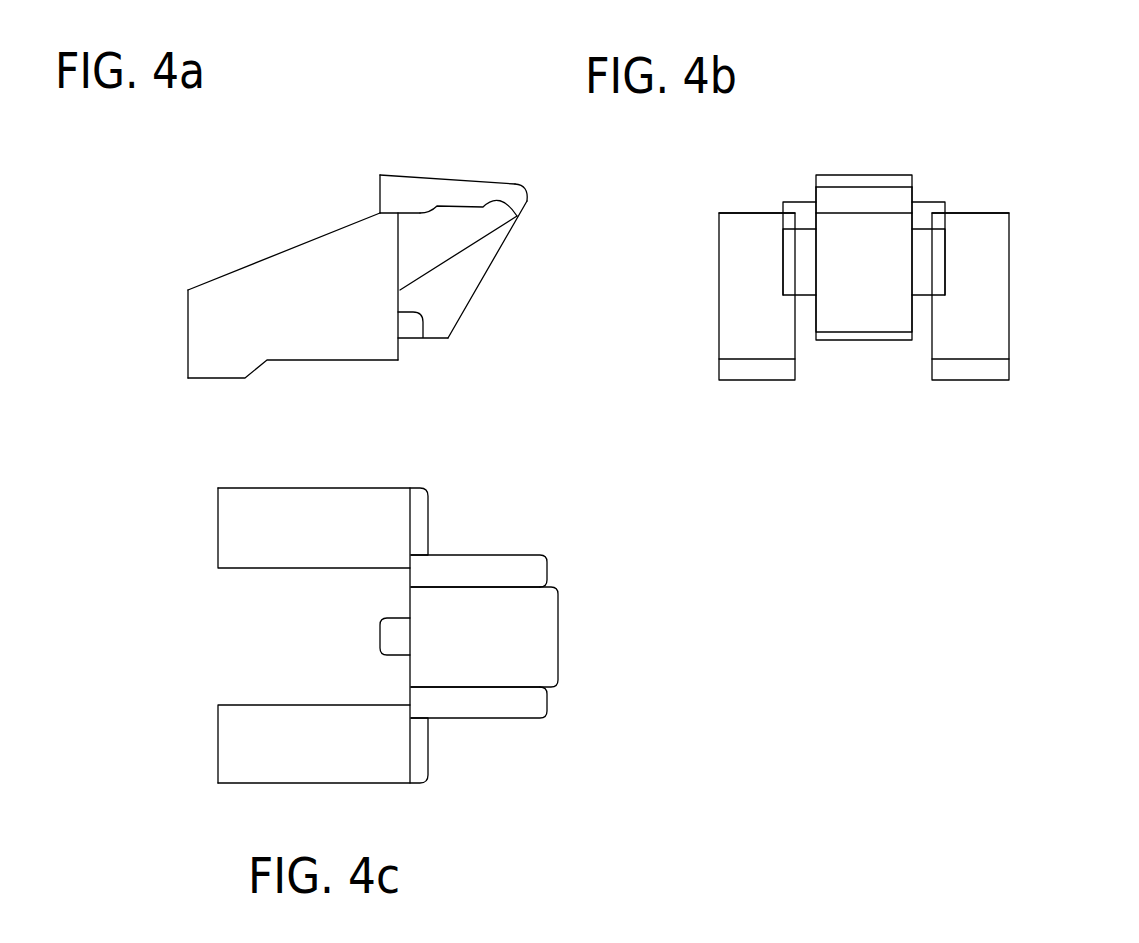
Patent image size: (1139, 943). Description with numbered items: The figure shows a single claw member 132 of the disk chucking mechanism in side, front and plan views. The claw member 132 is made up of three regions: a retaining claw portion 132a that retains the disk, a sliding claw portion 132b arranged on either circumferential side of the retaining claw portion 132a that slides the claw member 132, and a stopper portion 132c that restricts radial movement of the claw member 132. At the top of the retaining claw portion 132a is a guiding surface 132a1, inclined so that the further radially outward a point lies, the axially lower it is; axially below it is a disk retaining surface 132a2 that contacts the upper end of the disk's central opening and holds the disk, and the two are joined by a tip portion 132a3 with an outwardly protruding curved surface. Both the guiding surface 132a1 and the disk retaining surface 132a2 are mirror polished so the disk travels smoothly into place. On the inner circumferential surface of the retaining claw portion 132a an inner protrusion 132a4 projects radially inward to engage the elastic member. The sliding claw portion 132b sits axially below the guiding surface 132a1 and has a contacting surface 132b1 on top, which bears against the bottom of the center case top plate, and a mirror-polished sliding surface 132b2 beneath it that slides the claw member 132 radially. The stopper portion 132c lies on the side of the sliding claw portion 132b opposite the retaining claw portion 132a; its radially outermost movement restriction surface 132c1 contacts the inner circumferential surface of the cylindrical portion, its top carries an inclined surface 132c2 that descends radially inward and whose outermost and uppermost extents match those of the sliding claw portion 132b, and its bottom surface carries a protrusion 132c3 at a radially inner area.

In FIG. 4a, the claw member 132 is at (317, 187).
In FIG. 4b, the claw member 132 is at (873, 147).
In FIG. 4c, the claw member 132 is at (520, 528).
In FIG. 4a, the retaining claw portion 132a is at (400, 195).
In FIG. 4b, the retaining claw portion 132a is at (922, 238).
In FIG. 4c, the retaining claw portion 132a is at (558, 625).
In FIG. 4a, the guiding surface 132a1 is at (462, 180).
In FIG. 4b, the guiding surface 132a1 is at (833, 178).
In FIG. 4c, the guiding surface 132a1 is at (512, 650).
In FIG. 4a, the disk retaining surface 132a2 is at (498, 258).
In FIG. 4b, the disk retaining surface 132a2 is at (867, 295).
In FIG. 4a, the tip portion 132a3 is at (527, 197).
In FIG. 4b, the tip portion 132a3 is at (887, 197).
In FIG. 4c, the inner protrusion 132a4 is at (388, 640).
In FIG. 4a, the sliding claw portion 132b is at (423, 278).
In FIG. 4b, the sliding claw portion 132b is at (782, 273).
In FIG. 4c, the sliding claw portion 132b is at (553, 568).
In FIG. 4a, the contacting surface 132b1 is at (413, 208).
In FIG. 4c, the contacting surface 132b1 is at (507, 568).
In FIG. 4a, the sliding surface 132b2 is at (448, 248).
In FIG. 4b, the sliding surface 132b2 is at (798, 280).
In FIG. 4a, the stopper portion 132c is at (262, 312).
In FIG. 4b, the stopper portion 132c is at (708, 270).
In FIG. 4c, the stopper portion 132c is at (278, 482).
In FIG. 4a, the movement restriction surface 132c1 is at (418, 340).
In FIG. 4b, the movement restriction surface 132c1 is at (734, 242).
In FIG. 4c, the movement restriction surface 132c1 is at (430, 513).
In FIG. 4a, the inclined surface 132c2 is at (213, 277).
In FIG. 4c, the inclined surface 132c2 is at (265, 538).
In FIG. 4a, the protrusion 132c3 is at (220, 368).
In FIG. 4b, the protrusion 132c3 is at (757, 372).